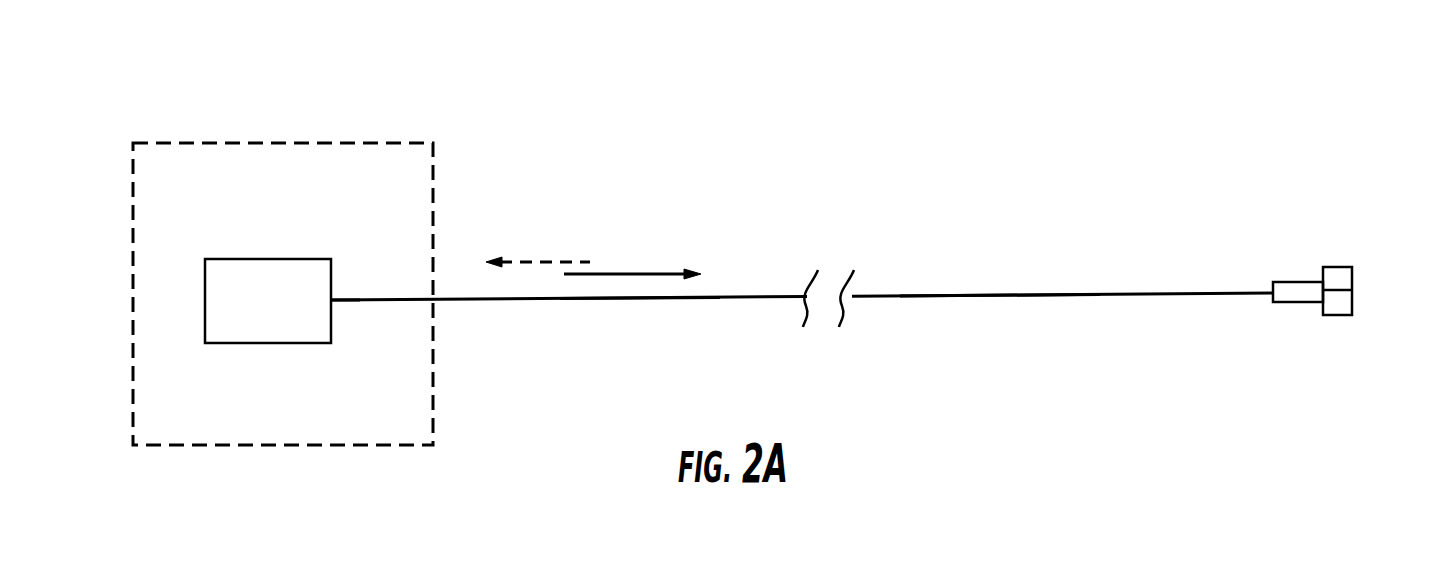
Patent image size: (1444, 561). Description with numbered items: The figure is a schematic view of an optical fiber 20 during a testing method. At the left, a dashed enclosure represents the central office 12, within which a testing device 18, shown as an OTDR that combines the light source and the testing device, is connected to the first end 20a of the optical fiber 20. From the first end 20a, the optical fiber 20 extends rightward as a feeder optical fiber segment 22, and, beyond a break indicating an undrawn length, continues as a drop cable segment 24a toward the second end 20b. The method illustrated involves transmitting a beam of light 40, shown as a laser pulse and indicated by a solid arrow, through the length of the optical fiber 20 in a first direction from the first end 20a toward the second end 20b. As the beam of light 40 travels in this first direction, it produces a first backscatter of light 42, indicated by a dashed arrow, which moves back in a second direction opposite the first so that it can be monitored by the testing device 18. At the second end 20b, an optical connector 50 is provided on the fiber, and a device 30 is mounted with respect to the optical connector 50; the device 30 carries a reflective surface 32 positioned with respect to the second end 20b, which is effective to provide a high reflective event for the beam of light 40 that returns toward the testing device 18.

The central office 12 is at (307, 142).
The OTDR testing device 18 is at (292, 258).
The optical fiber 20 is at (888, 179).
The first end 20a is at (352, 298).
The second end 20b is at (1327, 288).
The feeder optical fiber segment 22 is at (645, 302).
The drop cable segment 24a is at (998, 300).
The device 30 is at (1340, 266).
The reflective surface 32 is at (1323, 305).
The beam of light 40 is at (640, 271).
The first backscatter of light 42 is at (528, 258).
The optical connector 50 is at (1283, 281).